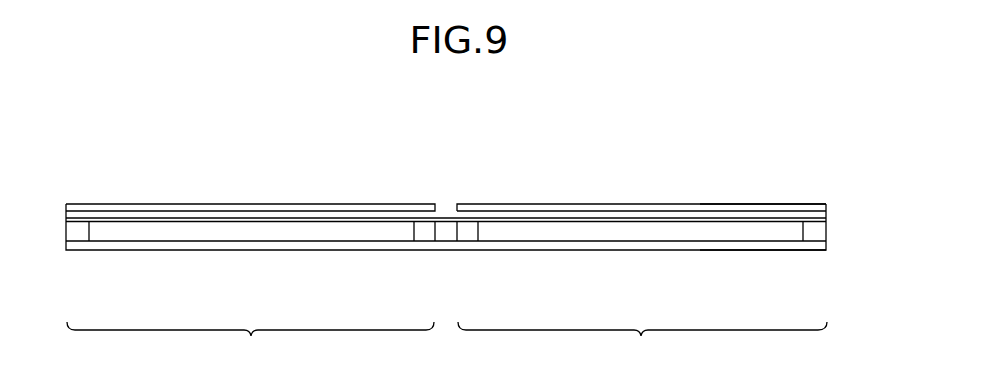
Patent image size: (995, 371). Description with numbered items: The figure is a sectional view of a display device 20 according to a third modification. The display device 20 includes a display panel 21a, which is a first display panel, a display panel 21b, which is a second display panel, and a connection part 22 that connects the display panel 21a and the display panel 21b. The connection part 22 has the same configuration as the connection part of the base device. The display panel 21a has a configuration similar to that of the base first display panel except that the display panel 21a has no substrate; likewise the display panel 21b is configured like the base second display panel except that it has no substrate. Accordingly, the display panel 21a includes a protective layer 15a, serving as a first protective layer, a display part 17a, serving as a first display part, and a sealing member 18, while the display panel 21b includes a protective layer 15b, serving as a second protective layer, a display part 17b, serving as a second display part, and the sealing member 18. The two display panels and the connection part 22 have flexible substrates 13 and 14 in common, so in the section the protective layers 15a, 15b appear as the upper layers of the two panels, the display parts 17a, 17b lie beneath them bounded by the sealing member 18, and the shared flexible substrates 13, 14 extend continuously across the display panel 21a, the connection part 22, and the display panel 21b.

The flexible substrate 13 is at (830, 208).
The flexible substrate 14 is at (826, 250).
The protective layer 15a is at (249, 204).
The protective layer 15b is at (640, 204).
The display part 17a is at (252, 229).
The display part 17b is at (642, 229).
The sealing member 18 is at (66, 228).
The display device 20 is at (833, 111).
The display panel 21a is at (250, 343).
The display panel 21b is at (642, 343).
The connection part 22 is at (445, 253).